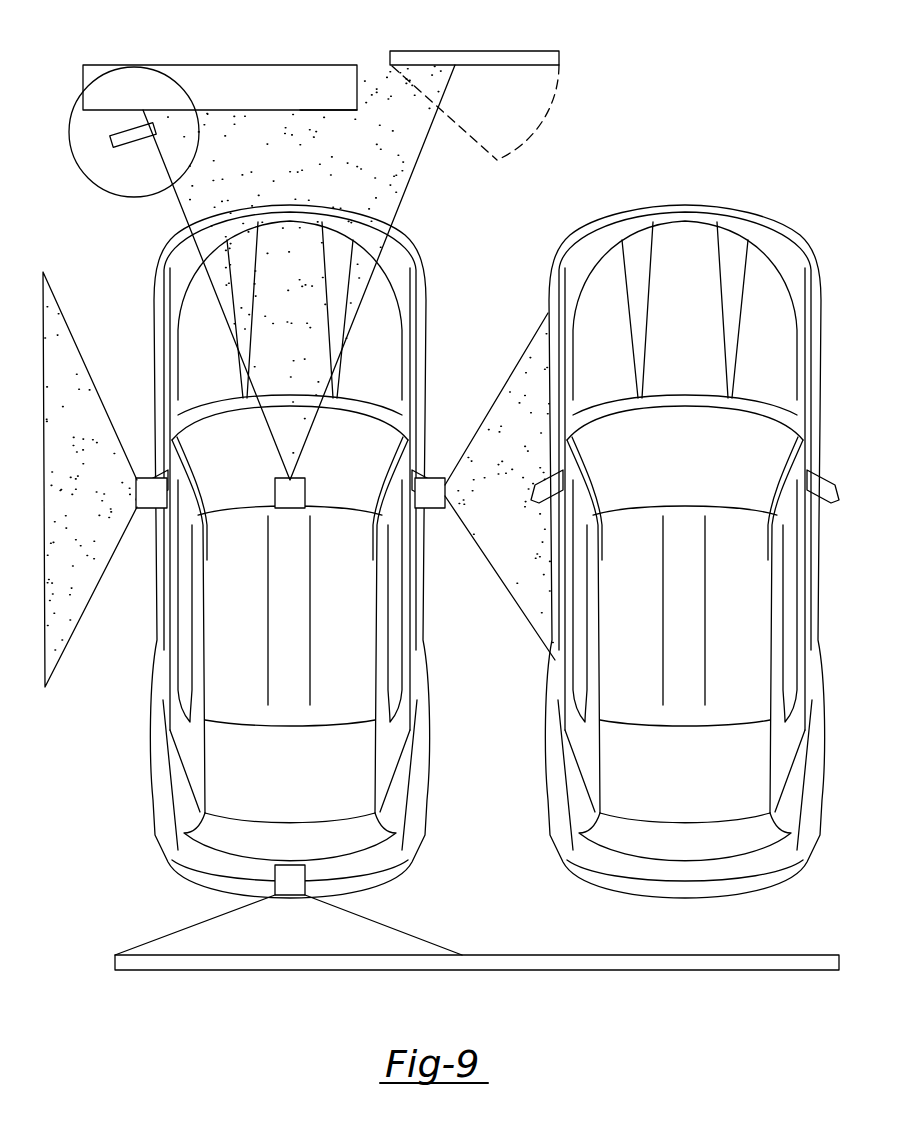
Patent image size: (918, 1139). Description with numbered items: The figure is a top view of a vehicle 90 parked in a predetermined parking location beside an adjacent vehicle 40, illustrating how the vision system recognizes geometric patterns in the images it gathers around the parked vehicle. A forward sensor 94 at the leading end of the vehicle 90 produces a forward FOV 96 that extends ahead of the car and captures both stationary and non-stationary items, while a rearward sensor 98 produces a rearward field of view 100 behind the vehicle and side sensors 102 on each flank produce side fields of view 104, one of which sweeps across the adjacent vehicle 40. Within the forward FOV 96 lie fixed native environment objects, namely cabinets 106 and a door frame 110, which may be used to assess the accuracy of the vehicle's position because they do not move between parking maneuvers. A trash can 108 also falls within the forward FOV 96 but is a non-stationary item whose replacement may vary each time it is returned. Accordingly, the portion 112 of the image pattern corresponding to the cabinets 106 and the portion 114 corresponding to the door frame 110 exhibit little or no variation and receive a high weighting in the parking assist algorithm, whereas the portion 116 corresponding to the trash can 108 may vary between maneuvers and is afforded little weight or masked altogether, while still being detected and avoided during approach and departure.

The adjacent vehicle 40 is at (780, 810).
The vehicle 90 is at (385, 810).
The forward sensor 94 is at (275, 490).
The forward FOV 96 is at (410, 182).
The rearward sensor 98 is at (282, 865).
The rearward sensor field of view 100 is at (186, 928).
The side sensors 102 is at (138, 477).
The side sensor fields of view 104 is at (57, 305).
The cabinets 106 is at (298, 85).
The trash can 108 is at (76, 160).
The door frame 110 is at (416, 50).
The portion of image pattern corresponding to cabinets 112 is at (322, 110).
The portion of image pattern corresponding to door frame 114 is at (443, 82).
The portion of image pattern corresponding to trash can 116 is at (203, 155).